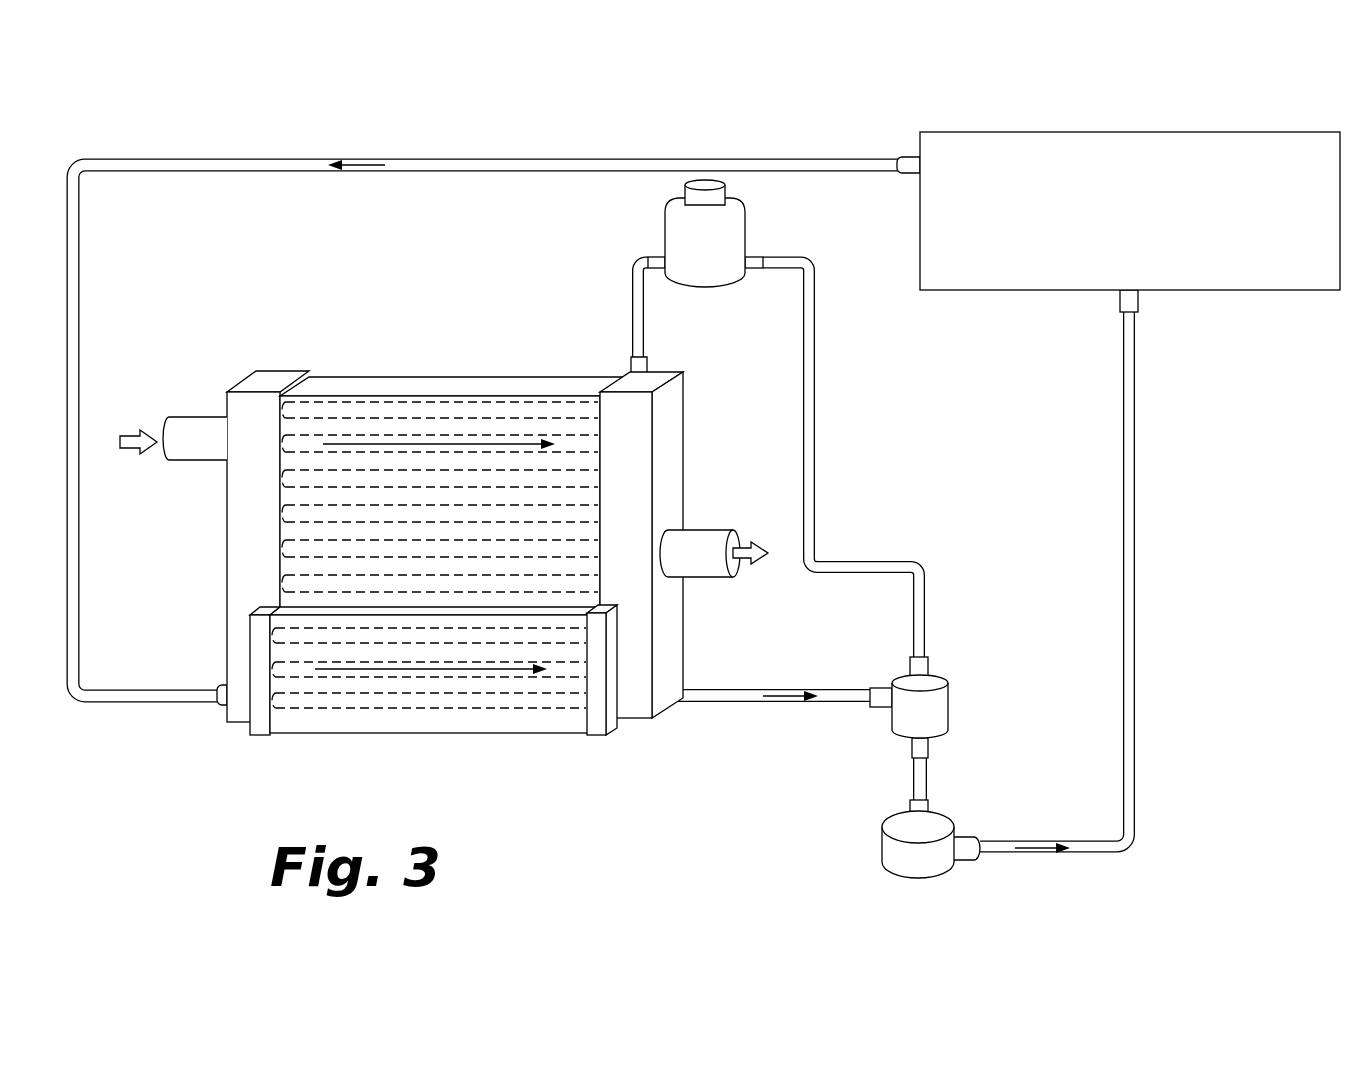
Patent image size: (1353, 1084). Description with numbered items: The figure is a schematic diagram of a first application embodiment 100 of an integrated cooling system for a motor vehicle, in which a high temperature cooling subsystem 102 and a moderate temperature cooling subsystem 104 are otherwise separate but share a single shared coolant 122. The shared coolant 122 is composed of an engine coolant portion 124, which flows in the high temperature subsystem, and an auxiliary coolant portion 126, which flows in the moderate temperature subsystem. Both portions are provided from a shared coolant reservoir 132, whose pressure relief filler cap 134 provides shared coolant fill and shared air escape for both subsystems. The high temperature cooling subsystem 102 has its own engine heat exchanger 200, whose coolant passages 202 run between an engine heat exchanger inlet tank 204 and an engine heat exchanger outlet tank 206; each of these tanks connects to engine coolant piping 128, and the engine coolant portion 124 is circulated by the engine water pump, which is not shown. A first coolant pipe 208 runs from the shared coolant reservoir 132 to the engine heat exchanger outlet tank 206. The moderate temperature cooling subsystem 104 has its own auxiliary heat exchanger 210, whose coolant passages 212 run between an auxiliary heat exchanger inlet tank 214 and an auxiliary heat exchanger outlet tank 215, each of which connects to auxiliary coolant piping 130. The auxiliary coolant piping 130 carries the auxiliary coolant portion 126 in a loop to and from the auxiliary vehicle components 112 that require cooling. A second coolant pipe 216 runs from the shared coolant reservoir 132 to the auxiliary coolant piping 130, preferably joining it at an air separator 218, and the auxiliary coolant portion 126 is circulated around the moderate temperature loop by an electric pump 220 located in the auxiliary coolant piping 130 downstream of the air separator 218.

The first application embodiment of the integrated cooling system 100 is at (281, 312).
The high temperature cooling subsystem 102 is at (696, 492).
The moderate temperature cooling subsystem 104 is at (588, 780).
The auxiliary vehicle components 112 is at (960, 130).
The shared coolant 122 is at (595, 506).
The engine coolant portion 124 is at (428, 443).
The auxiliary coolant portion 126 is at (362, 170).
The engine coolant piping 128 is at (212, 414).
The auxiliary coolant piping 130 is at (458, 158).
The shared coolant reservoir 132 is at (745, 235).
The pressure relief filler cap 134 is at (720, 190).
The engine heat exchanger 200 is at (473, 383).
The coolant passages 202 is at (562, 467).
The engine heat exchanger inlet tank 204 is at (275, 384).
The engine heat exchanger outlet tank 206 is at (673, 370).
The first coolant pipe 208 is at (633, 320).
The auxiliary heat exchanger 210 is at (417, 734).
The coolant passages 212 is at (538, 690).
The auxiliary heat exchanger inlet tank 214 is at (260, 737).
The auxiliary heat exchanger outlet tank 215 is at (598, 734).
The second coolant pipe 216 is at (818, 456).
The air separator 218 is at (942, 682).
The electric pump 220 is at (938, 826).